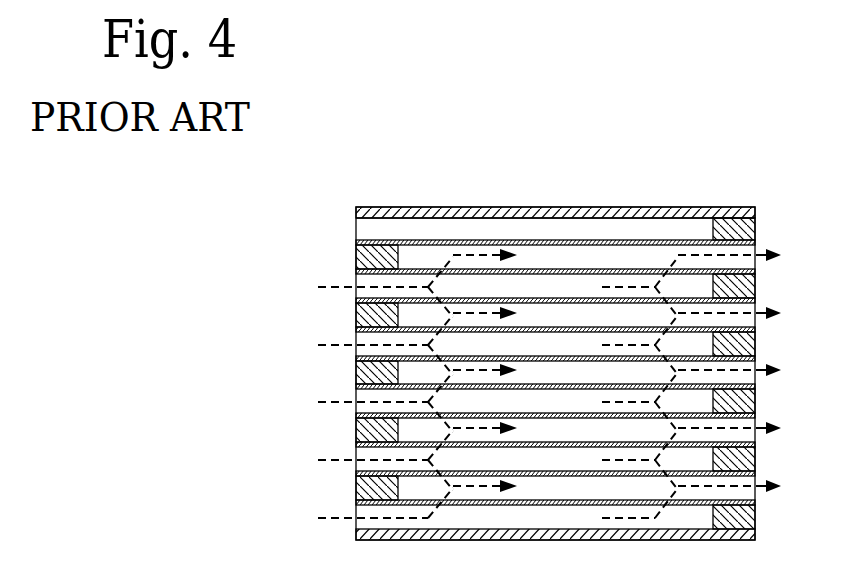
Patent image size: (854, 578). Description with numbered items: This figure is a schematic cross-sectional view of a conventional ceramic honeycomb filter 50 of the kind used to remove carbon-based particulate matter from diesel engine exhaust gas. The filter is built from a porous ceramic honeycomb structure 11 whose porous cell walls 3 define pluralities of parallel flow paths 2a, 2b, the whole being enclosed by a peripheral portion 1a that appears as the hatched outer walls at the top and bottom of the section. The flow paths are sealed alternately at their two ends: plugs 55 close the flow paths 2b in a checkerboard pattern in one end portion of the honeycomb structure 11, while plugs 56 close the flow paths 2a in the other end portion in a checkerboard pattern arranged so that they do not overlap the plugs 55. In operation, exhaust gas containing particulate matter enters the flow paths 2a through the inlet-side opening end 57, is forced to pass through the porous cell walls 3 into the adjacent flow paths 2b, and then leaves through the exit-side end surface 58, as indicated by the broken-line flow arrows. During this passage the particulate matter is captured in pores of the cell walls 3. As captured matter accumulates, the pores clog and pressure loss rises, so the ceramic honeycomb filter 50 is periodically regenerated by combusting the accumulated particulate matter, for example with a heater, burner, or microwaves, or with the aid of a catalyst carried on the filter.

The ceramic honeycomb filter 50 is at (347, 158).
The porous ceramic honeycomb structure 11 is at (405, 203).
The peripheral portion 1a is at (477, 215).
The porous cell walls 3 is at (530, 240).
The flow paths 2a is at (593, 225).
The flow paths 2b is at (650, 255).
The plugs 55 is at (360, 378).
The plugs 56 is at (745, 397).
The inlet-side opening end 57 is at (358, 453).
The exit-side end surface 58 is at (756, 437).